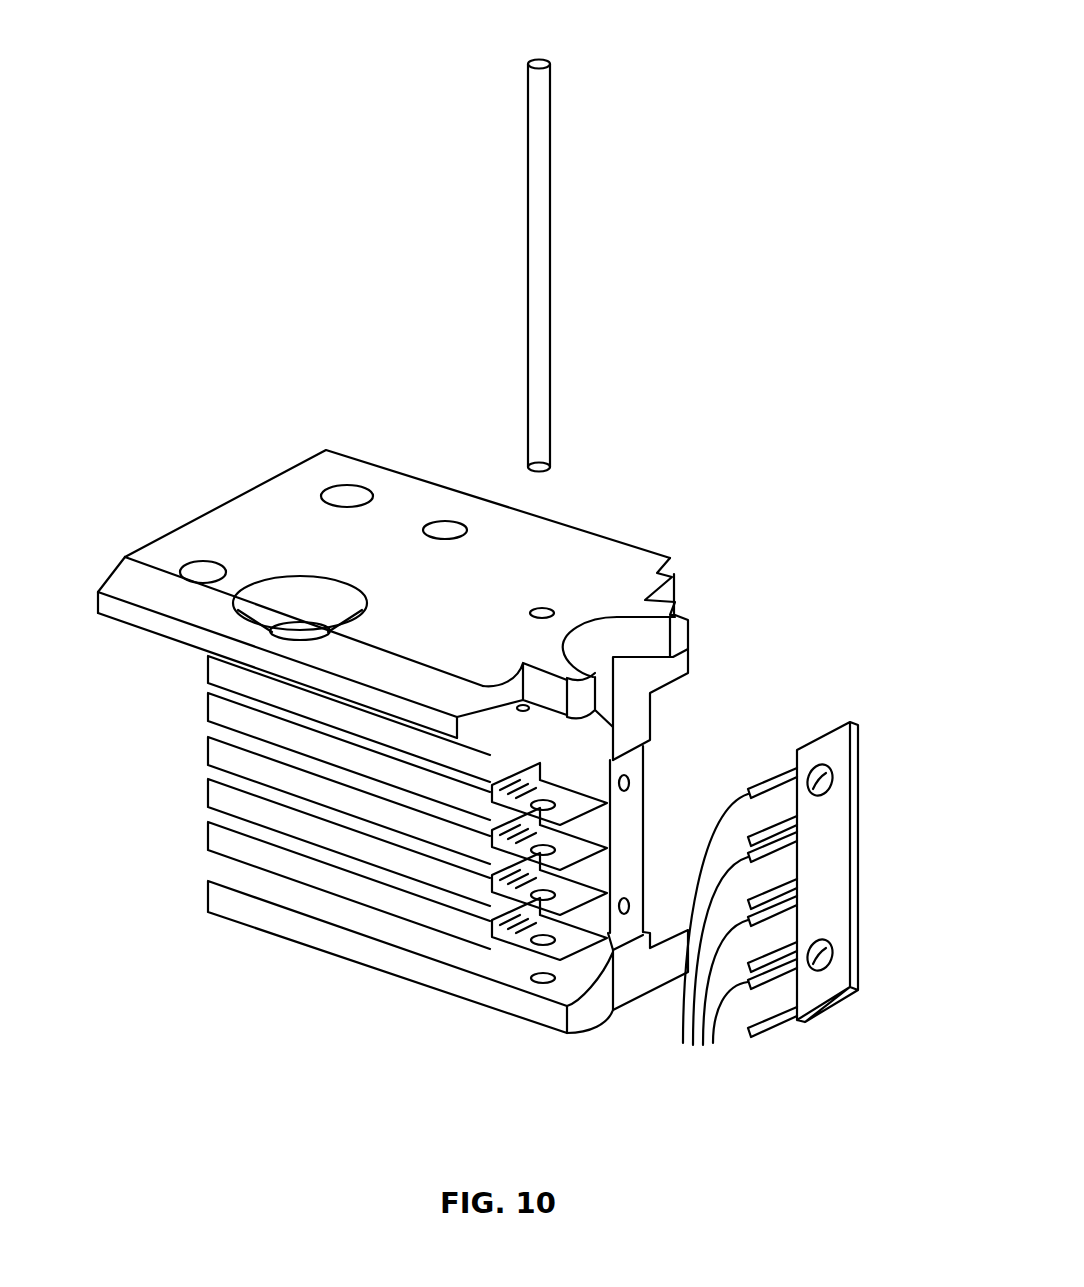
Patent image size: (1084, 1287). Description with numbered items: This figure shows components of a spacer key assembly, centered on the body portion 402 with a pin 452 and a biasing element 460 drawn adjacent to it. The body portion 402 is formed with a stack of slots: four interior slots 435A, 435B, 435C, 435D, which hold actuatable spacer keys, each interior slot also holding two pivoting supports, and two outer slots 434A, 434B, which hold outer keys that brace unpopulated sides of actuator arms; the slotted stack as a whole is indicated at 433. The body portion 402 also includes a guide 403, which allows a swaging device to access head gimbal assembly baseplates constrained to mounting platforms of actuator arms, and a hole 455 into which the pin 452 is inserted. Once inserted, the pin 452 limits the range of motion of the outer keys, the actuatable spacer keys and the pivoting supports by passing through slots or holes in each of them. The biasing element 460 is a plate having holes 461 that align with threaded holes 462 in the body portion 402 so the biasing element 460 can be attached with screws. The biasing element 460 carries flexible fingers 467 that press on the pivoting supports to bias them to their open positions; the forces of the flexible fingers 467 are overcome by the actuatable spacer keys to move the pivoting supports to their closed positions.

The pin 452 is at (542, 95).
The body portion 402 is at (397, 554).
The guide 403 is at (616, 600).
The hole 455 is at (543, 595).
The stack 433 is at (378, 841).
The outer slot 434A is at (192, 655).
The interior slot 435A is at (192, 688).
The interior slot 435B is at (192, 732).
The interior slot 435C is at (192, 775).
The interior slot 435D is at (192, 821).
The outer slot 434B is at (192, 868).
The threaded holes 462 is at (633, 906).
The biasing element 460 is at (833, 745).
The holes 461 is at (820, 963).
The flexible fingers 467 is at (753, 1035).